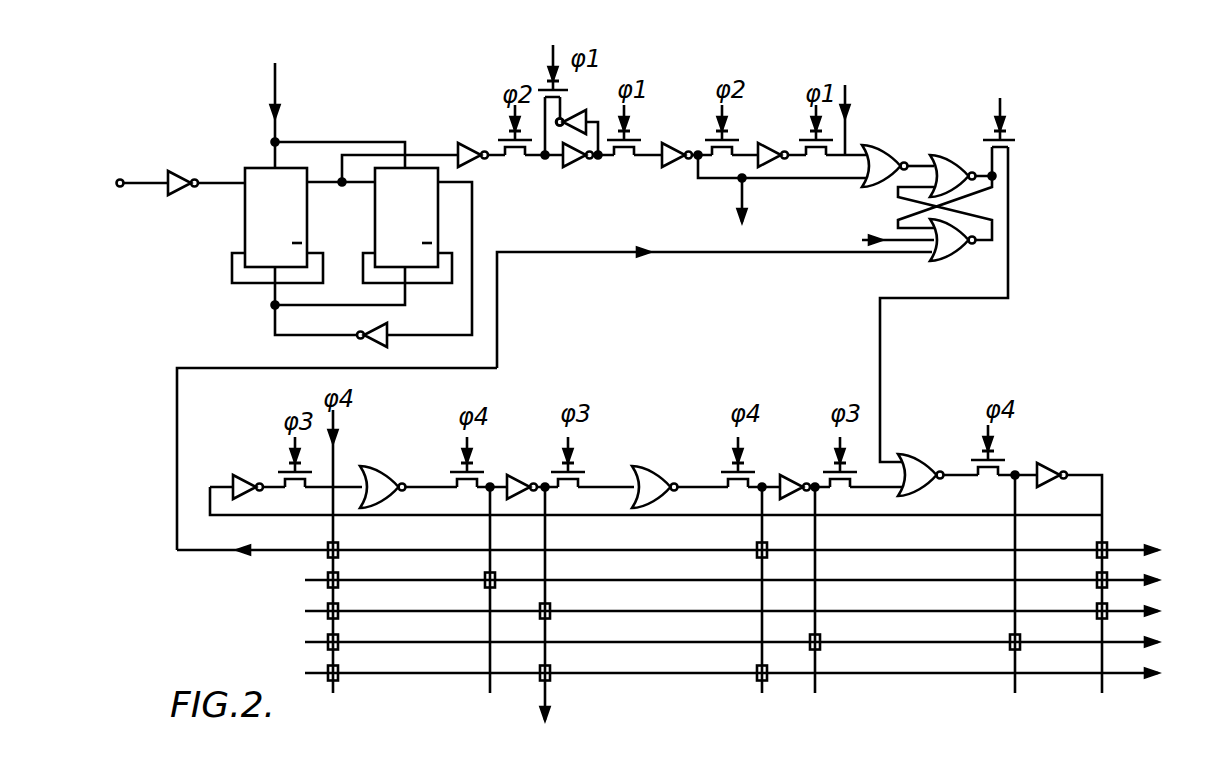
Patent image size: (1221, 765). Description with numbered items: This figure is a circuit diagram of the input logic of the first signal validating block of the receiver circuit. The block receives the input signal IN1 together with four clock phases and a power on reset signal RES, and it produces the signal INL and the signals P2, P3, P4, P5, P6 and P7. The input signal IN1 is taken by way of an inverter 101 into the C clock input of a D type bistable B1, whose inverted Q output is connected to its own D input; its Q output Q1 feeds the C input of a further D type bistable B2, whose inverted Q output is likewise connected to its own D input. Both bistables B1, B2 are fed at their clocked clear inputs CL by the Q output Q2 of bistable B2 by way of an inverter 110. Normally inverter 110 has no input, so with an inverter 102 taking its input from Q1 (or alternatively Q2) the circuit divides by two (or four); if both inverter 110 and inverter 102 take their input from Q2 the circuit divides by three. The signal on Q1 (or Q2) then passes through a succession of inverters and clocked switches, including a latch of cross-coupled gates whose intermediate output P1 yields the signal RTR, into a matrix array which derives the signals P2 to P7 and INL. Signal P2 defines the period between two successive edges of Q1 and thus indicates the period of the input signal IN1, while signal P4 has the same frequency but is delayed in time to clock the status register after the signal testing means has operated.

The inverter 101 is at (185, 172).
The inverter 102 is at (467, 143).
The inverter 110 is at (364, 341).
The D2 type bistable B1 is at (232, 221).
The further D2 type bistable B2 is at (456, 217).
The Q output of bistable B1 Q1 is at (313, 184).
The Q output of bistable B2 Q2 is at (497, 182).
The input signal IN1 is at (130, 171).
The power on reset signal RES is at (608, 157).
The signal INL is at (747, 240).
The NOR gate output P1 is at (918, 160).
The RTR signal / latch output RTR is at (972, 268).
The signal P2 is at (749, 673).
The signal P3 is at (749, 642).
The signal P4 is at (749, 611).
The signal P5 is at (749, 580).
The signal P6 is at (685, 550).
The signal P7 is at (568, 721).